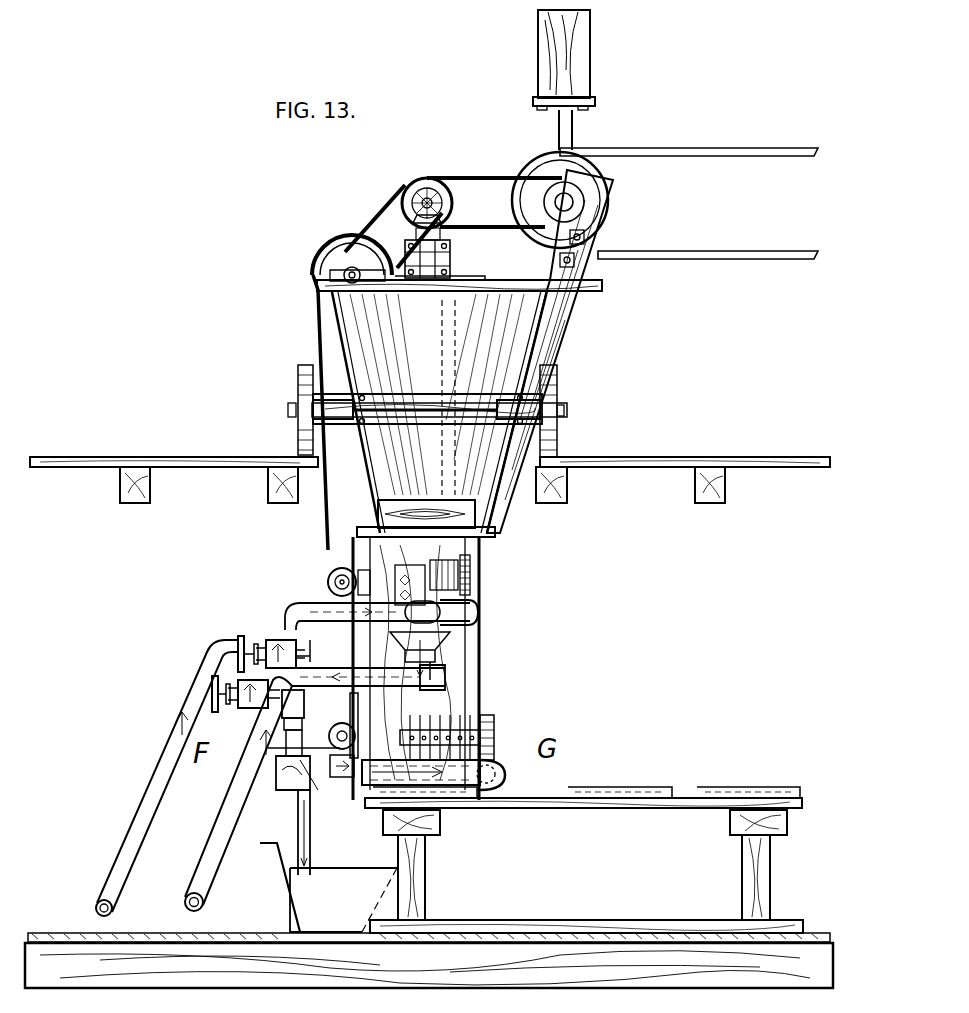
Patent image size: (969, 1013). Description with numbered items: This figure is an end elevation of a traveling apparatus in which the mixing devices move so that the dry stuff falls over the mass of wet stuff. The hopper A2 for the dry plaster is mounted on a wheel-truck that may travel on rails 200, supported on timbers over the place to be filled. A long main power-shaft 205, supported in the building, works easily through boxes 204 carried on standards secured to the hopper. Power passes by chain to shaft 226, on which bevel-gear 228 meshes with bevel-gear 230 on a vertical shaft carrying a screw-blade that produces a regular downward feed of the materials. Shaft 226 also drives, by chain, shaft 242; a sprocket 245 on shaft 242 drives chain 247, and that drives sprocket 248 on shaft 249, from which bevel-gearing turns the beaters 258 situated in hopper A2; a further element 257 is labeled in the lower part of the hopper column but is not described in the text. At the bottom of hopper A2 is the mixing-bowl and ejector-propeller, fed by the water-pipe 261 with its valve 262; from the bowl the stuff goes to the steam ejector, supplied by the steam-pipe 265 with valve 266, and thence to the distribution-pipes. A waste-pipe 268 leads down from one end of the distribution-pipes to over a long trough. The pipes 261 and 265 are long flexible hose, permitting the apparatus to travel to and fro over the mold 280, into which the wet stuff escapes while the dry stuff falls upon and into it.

The rails 200 is at (557, 465).
The boxes 204 is at (689, 169).
The main power-shaft 205 is at (708, 230).
The shaft 226 is at (412, 190).
The bevel-gear 228 is at (428, 190).
The bevel-gear 230 is at (455, 212).
The shaft 242 is at (314, 392).
The sprocket 245 is at (392, 226).
The chain 247 is at (314, 338).
The sprocket 248 is at (337, 580).
The shaft 249 is at (338, 582).
The roller drum 257 is at (486, 704).
The beaters 258 is at (472, 562).
The water-pipe 261 is at (158, 774).
The valve 262 is at (228, 649).
The steam-pipe 265 is at (229, 794).
The valve 266 is at (207, 692).
The waste-pipe 268 is at (312, 841).
The mold 280 is at (652, 789).
The hopper A2 is at (439, 414).